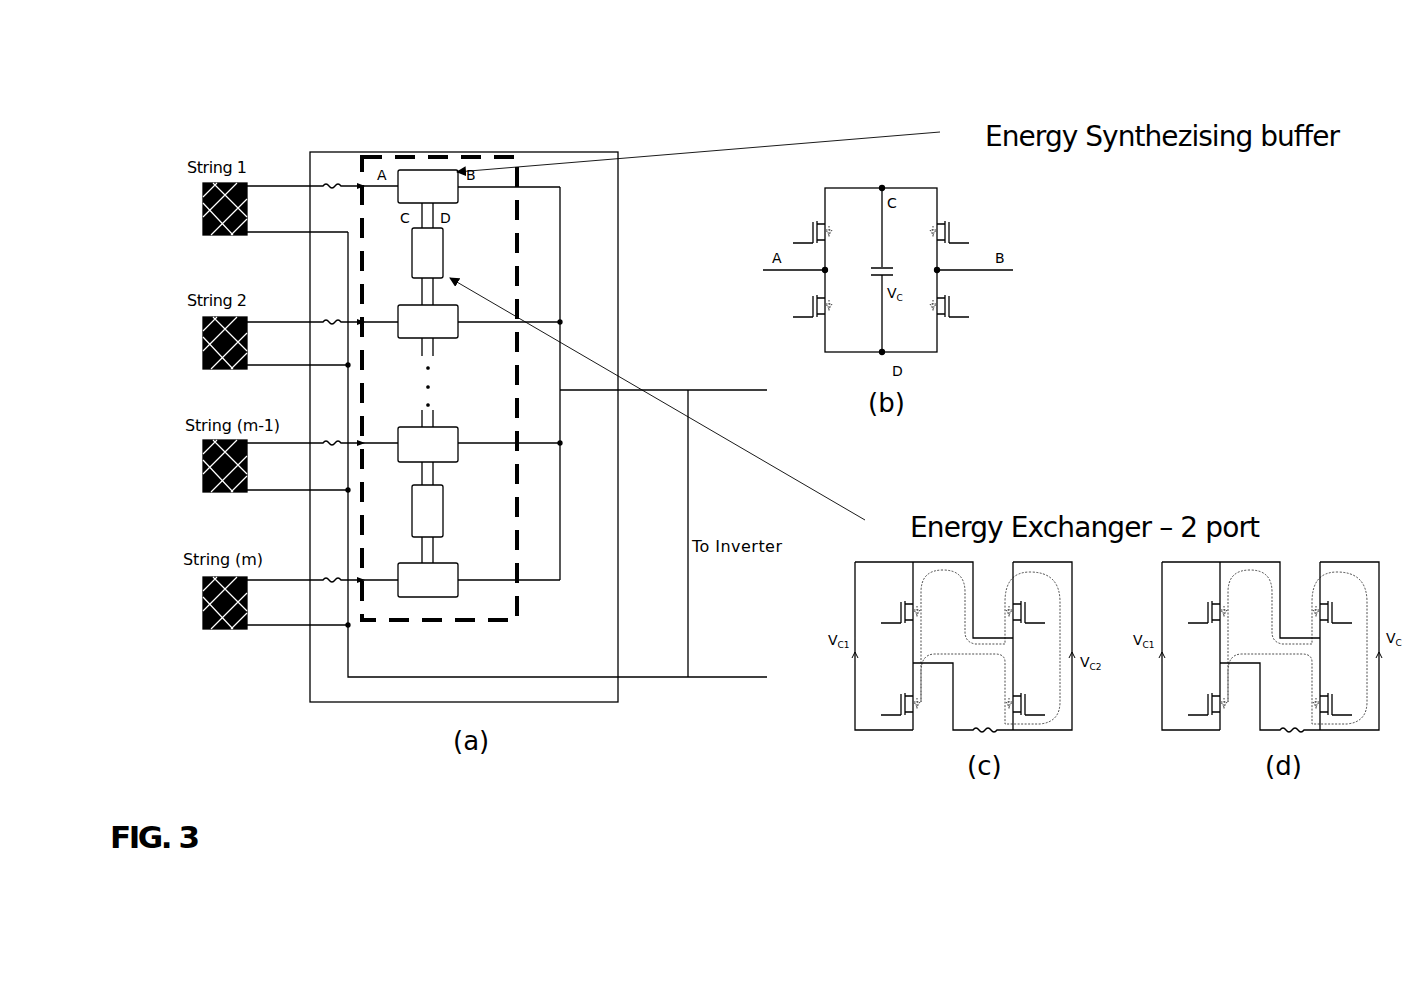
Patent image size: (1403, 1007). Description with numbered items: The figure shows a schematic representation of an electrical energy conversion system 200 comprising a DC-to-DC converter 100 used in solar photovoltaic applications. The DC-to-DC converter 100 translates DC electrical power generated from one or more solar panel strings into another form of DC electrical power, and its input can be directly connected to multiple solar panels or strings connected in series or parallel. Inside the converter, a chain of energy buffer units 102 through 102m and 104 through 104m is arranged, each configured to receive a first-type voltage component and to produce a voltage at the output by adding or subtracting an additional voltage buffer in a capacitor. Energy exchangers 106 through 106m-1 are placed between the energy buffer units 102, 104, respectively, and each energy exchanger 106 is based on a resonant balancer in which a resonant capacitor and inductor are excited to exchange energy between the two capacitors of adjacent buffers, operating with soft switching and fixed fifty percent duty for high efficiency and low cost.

The DC-to-DC power converter 100 is at (437, 156).
The electrical energy conversion system 200 is at (560, 112).
The energy buffer unit 102 is at (460, 197).
The energy buffer unit 104 is at (460, 340).
The energy exchanger 106 is at (412, 263).
The energy buffer unit 102m is at (403, 447).
The energy buffer unit 104m is at (403, 580).
The energy exchanger 106m-1 is at (447, 515).